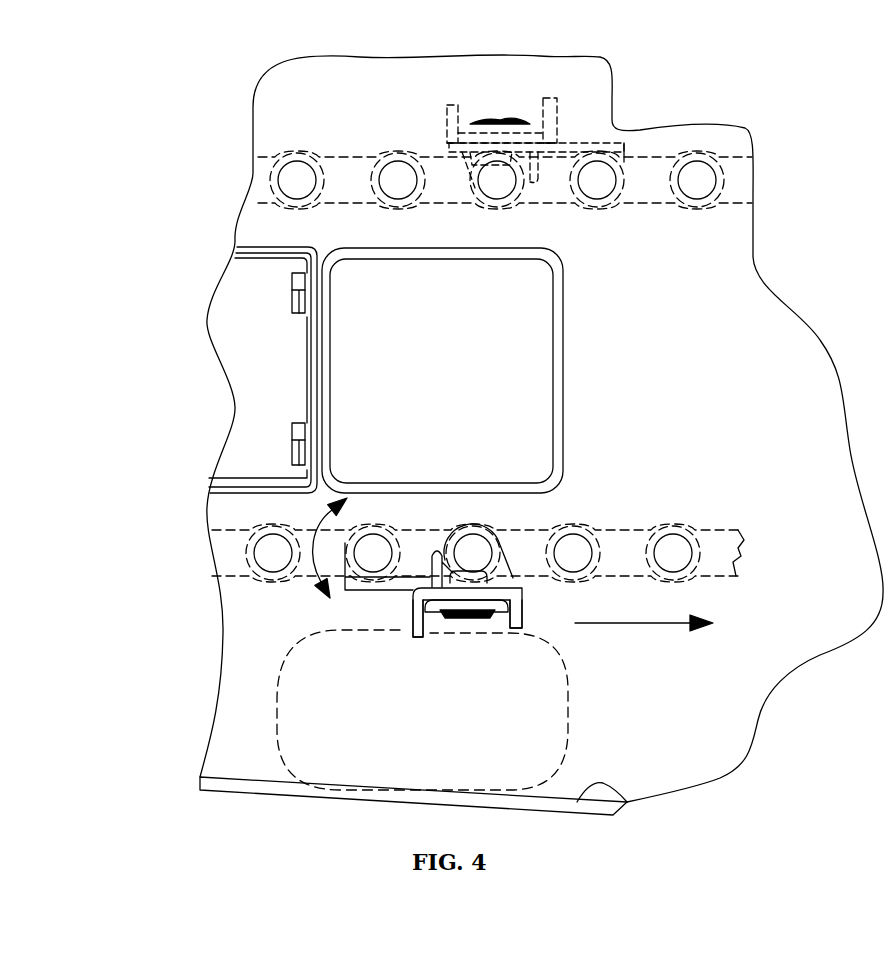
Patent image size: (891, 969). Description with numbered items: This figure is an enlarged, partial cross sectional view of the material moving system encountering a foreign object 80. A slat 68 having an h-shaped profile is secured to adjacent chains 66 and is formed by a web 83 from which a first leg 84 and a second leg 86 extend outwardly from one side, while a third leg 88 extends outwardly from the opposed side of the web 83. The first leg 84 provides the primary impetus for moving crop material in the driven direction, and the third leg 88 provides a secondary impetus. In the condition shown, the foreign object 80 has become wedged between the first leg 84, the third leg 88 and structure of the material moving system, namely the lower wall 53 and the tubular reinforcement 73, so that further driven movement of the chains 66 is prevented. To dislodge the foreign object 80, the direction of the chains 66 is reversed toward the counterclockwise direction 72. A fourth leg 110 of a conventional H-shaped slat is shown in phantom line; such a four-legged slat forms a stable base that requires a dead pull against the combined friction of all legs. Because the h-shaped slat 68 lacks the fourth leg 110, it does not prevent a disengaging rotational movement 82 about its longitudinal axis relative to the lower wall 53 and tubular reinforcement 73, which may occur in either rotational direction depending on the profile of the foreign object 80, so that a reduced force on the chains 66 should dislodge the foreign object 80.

The lower wall 53 is at (627, 802).
The chains 66 is at (718, 530).
The slat 68 is at (523, 612).
The counterclockwise direction 72 is at (648, 623).
The tubular reinforcement 73 is at (566, 334).
The foreign object 80 is at (288, 658).
The disengaging rotational movement 82 is at (312, 522).
The web 83 is at (457, 615).
The first leg 84 is at (413, 612).
The second leg 86 is at (512, 620).
The third leg 88 is at (457, 537).
The fourth leg 110 is at (507, 565).